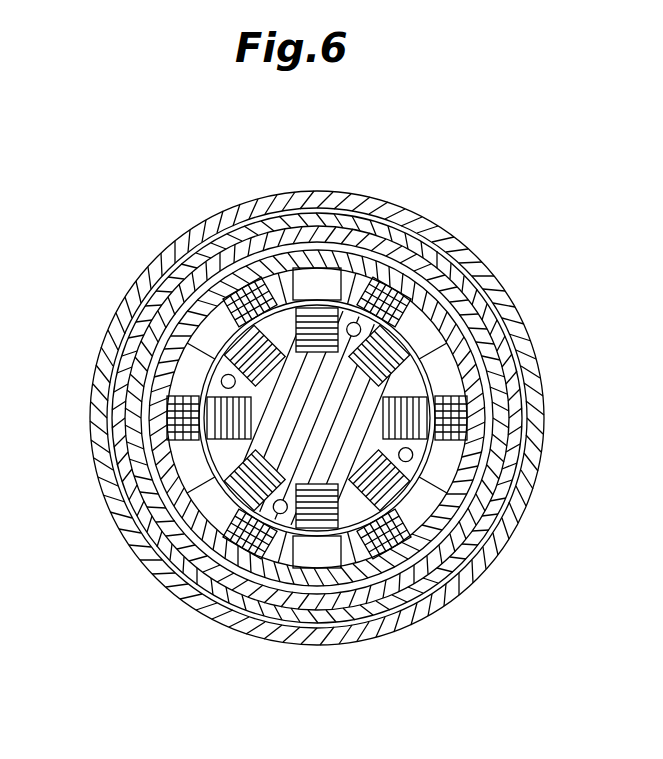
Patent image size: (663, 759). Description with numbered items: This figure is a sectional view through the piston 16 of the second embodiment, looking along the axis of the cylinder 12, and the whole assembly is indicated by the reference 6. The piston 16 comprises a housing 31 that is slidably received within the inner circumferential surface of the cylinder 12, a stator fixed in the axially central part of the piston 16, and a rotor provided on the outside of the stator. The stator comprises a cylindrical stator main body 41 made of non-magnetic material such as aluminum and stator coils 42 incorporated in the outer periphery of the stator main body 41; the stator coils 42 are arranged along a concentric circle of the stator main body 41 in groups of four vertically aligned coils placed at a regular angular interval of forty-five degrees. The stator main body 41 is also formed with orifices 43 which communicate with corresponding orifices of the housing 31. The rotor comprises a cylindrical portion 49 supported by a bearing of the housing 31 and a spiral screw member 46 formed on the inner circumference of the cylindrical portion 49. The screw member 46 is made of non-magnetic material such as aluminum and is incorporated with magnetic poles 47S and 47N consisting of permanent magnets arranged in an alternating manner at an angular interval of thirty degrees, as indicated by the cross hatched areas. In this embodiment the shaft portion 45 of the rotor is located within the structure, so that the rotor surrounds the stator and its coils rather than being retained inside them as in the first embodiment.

The motor assembly 6 is at (98, 196).
The cylinder 12 is at (465, 580).
The piston 16 is at (452, 253).
The housing 31 is at (490, 323).
The stator main body 41 is at (213, 450).
The stator coils 42 is at (205, 476).
The orifices 43 is at (408, 456).
The shaft portion 45 is at (260, 412).
The spiral screw member 46 is at (277, 278).
The magnetic poles (N poles) 47N is at (238, 530).
The magnetic poles (S poles) 47S is at (312, 563).
The cylindrical portion 49 is at (377, 273).